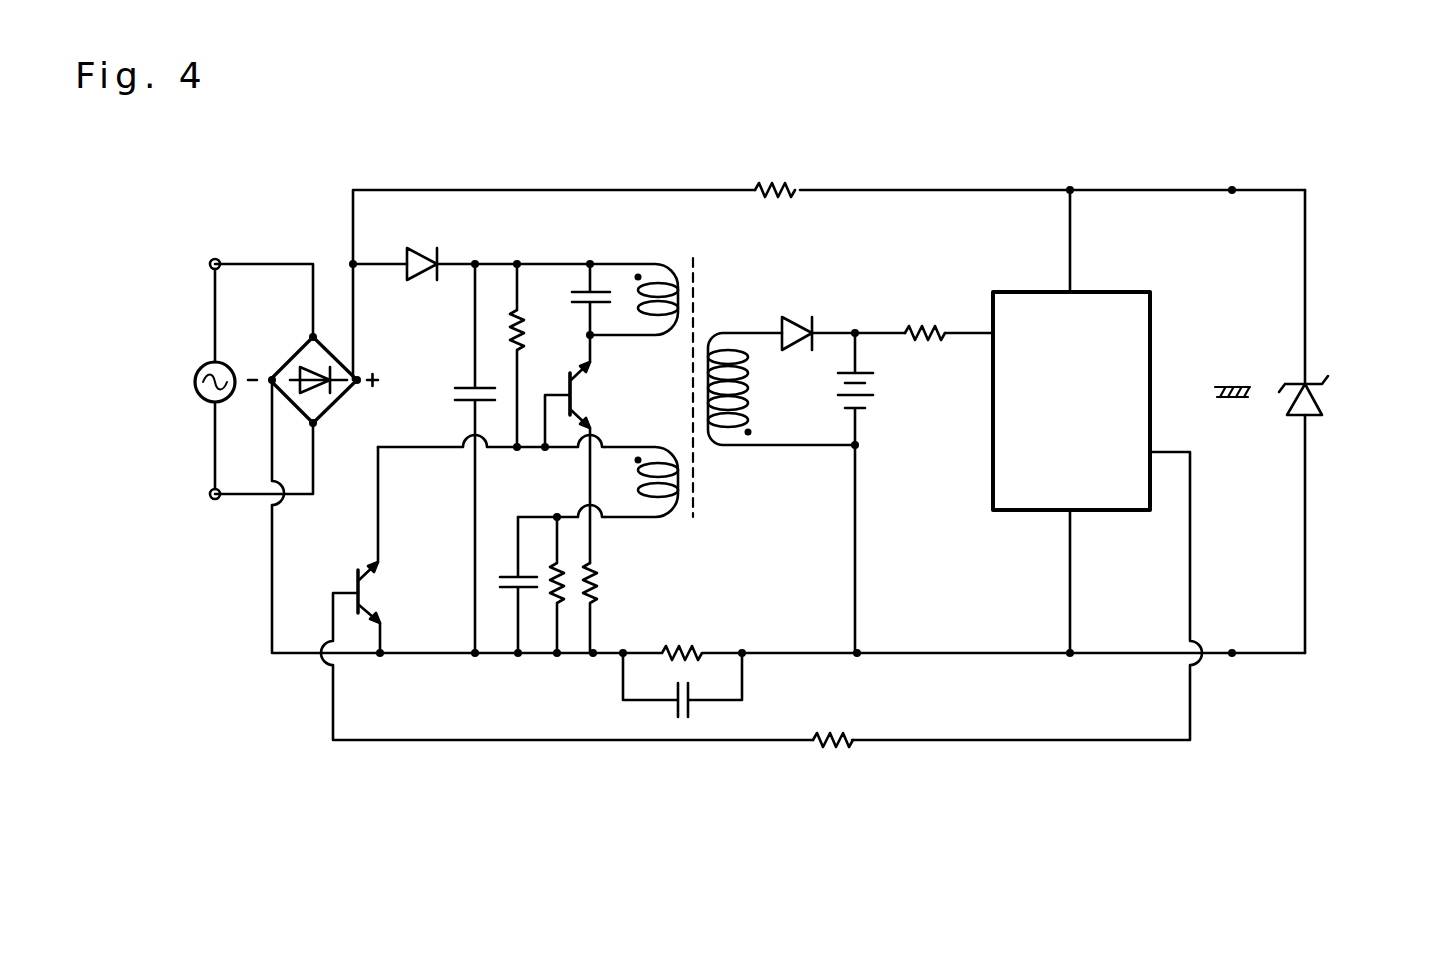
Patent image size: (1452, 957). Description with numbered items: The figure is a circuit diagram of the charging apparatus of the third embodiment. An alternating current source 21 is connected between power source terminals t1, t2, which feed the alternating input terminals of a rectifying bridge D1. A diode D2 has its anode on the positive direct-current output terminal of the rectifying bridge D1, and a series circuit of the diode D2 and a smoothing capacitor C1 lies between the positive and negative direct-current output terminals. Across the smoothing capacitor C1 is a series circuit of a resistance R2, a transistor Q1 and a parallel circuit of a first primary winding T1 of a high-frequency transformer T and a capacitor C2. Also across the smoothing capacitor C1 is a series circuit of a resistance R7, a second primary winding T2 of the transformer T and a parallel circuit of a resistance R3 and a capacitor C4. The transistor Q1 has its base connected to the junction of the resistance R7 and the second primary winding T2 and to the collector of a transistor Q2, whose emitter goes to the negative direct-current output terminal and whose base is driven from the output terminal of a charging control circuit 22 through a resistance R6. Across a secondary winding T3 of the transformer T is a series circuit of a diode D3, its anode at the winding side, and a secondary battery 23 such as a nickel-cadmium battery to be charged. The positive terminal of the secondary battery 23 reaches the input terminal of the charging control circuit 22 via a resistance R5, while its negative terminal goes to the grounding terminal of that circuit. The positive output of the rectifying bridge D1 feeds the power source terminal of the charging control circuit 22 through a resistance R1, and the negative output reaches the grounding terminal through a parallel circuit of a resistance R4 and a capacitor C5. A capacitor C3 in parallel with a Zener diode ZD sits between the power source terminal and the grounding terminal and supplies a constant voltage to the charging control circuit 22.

The power source terminal t1 is at (215, 259).
The power source terminal t2 is at (215, 505).
The alternating current source 21 is at (192, 380).
The rectifying bridge D1 is at (332, 400).
The diode D2 is at (427, 251).
The smoothing capacitor C1 is at (457, 392).
The capacitor C2 is at (572, 297).
The resistance R7 is at (526, 326).
The transistor Q1 is at (564, 388).
The first primary winding T1 is at (683, 308).
The second primary winding T2 is at (683, 490).
The secondary winding T3 is at (708, 396).
The high-frequency transformer T is at (713, 456).
The diode D3 is at (798, 315).
The secondary battery 23 is at (873, 403).
The resistance R5 is at (920, 330).
The charging control circuit 22 is at (1012, 291).
The capacitor C3 is at (1210, 390).
The Zener diode ZD is at (1323, 397).
The resistance R1 is at (778, 183).
The transistor Q2 is at (357, 587).
The capacitor C4 is at (500, 585).
The resistance R3 is at (567, 600).
The resistance R2 is at (602, 597).
The resistance R4 is at (675, 645).
The capacitor C5 is at (697, 712).
The resistance R6 is at (835, 748).